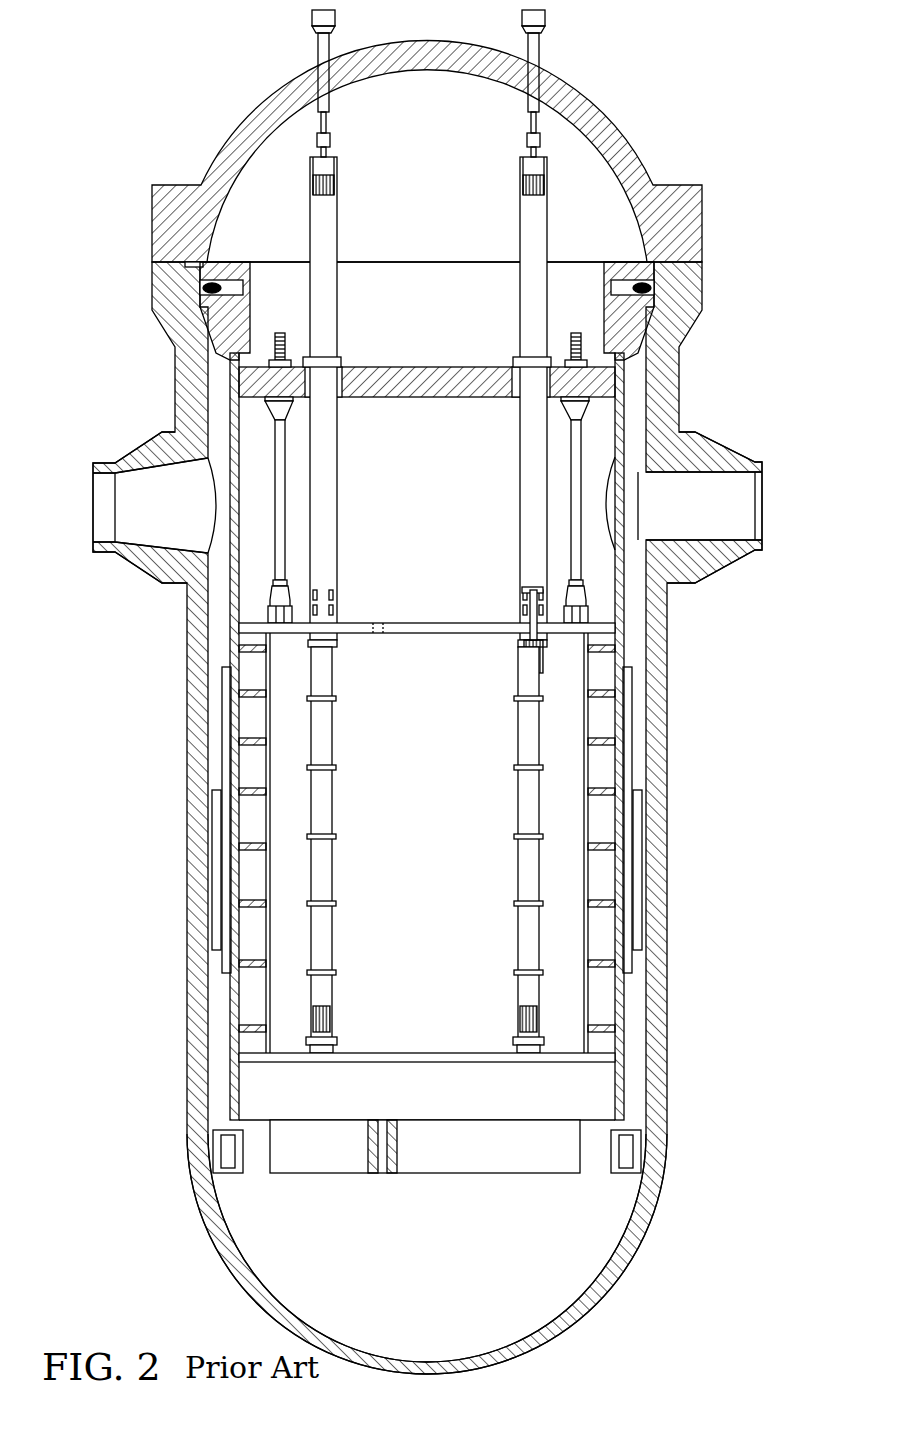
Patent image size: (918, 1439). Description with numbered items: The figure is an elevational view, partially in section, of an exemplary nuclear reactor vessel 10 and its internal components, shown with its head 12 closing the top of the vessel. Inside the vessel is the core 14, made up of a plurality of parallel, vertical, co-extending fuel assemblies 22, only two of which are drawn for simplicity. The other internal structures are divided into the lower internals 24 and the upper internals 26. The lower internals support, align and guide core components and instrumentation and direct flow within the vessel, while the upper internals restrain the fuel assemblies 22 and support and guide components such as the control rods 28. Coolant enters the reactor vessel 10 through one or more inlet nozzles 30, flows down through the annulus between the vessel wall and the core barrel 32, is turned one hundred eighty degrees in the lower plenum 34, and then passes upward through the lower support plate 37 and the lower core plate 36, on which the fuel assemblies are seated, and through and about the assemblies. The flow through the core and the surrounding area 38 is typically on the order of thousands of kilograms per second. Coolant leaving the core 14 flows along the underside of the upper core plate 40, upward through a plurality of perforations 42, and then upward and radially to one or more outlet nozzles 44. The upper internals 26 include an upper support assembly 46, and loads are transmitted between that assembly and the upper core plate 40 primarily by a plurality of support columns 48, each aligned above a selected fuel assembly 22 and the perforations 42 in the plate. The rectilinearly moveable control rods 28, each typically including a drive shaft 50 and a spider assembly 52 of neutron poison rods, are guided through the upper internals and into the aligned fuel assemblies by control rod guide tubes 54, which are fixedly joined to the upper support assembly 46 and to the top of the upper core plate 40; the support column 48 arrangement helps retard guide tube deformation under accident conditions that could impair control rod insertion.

The reactor vessel 10 is at (668, 708).
The closure head 12 is at (705, 228).
The core 14 is at (437, 825).
The fuel assemblies 22 is at (335, 735).
The lower internals 24 is at (435, 1091).
The upper internals 26 is at (441, 470).
The control rods 28 is at (520, 634).
The inlet nozzles 30 is at (140, 446).
The core barrel 32 is at (235, 626).
The lower plenum 34 is at (600, 1232).
The lower core plate 36 is at (490, 1052).
The lower support plate 37 is at (470, 1160).
The surrounding area 38 is at (492, 818).
The upper core plate 40 is at (450, 632).
The perforations 42 is at (380, 622).
The outlet nozzles 44 is at (725, 450).
The upper support assembly 46 is at (615, 263).
The support columns 48 is at (287, 505).
The drive shaft 50 is at (527, 588).
The spider assembly 52 is at (520, 625).
The control rod guide tubes 54 is at (334, 445).